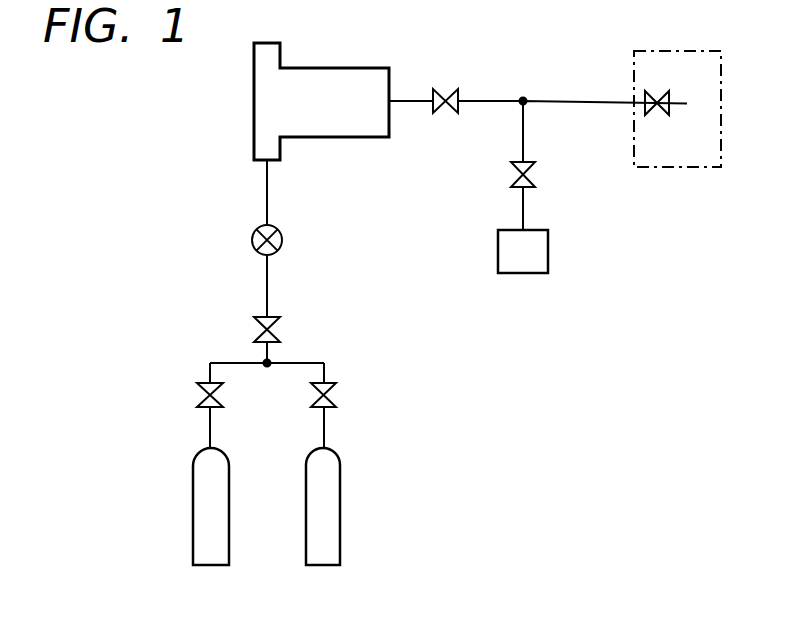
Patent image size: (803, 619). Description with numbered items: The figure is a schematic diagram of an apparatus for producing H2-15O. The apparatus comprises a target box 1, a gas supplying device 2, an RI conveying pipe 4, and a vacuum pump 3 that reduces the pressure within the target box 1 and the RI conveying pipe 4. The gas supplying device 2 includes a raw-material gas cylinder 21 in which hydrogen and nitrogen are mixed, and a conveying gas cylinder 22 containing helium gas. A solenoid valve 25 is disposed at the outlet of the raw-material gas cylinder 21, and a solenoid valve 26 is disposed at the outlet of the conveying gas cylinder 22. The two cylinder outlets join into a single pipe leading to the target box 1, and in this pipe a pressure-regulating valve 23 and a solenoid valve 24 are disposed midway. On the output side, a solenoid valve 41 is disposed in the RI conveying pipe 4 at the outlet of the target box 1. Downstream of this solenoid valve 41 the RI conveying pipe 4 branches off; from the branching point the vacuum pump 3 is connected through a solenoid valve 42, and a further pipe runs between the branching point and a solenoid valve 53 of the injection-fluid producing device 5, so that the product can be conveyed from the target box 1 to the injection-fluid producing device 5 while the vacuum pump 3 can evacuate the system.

The target box 1 is at (326, 68).
The gas supplying device 2 is at (403, 341).
The vacuum pump 3 is at (535, 274).
The RI conveying pipe 4 is at (506, 87).
The injection-fluid producing device 5 is at (711, 168).
The raw-material gas cylinder 21 is at (197, 473).
The conveying gas cylinder 22 is at (335, 473).
The pressure-regulating valve 23 is at (283, 238).
The solenoid valve 24 is at (280, 333).
The solenoid valve 25 is at (200, 400).
The solenoid valve 26 is at (330, 400).
The solenoid valve 41 is at (432, 114).
The solenoid valve 42 is at (535, 172).
The solenoid valve 53 is at (652, 92).